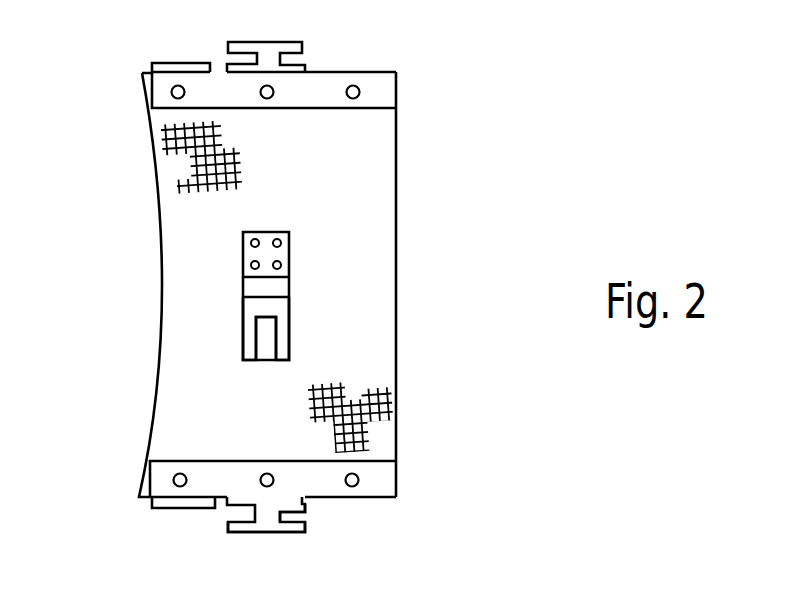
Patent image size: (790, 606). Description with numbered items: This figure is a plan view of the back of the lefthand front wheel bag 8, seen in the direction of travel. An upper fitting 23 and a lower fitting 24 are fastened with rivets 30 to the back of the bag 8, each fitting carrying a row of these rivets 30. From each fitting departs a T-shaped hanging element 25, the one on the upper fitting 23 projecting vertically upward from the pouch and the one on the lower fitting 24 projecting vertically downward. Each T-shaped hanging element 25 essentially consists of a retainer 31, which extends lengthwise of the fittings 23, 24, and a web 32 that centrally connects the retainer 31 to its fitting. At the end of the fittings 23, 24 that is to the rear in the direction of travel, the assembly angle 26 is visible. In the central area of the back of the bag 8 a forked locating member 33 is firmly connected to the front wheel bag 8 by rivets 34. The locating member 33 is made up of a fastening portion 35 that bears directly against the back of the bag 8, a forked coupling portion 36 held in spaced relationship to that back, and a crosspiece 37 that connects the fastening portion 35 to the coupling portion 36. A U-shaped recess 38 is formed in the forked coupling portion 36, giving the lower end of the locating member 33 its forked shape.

The front wheel bag 8 is at (122, 224).
The upper fitting 23 is at (381, 82).
The lower fitting 24 is at (384, 482).
The T-shaped hanging element 25 is at (271, 34).
The assembly angle 26 is at (158, 64).
The rivets 30 is at (360, 92).
The retainer 31 is at (298, 531).
The web 32 is at (272, 511).
The forked locating member 33 is at (275, 294).
The rivets 34 is at (277, 243).
The fastening portion 35 is at (280, 255).
The forked coupling portion 36 is at (279, 308).
The crosspiece 37 is at (279, 287).
The U-shaped recess 38 is at (268, 337).